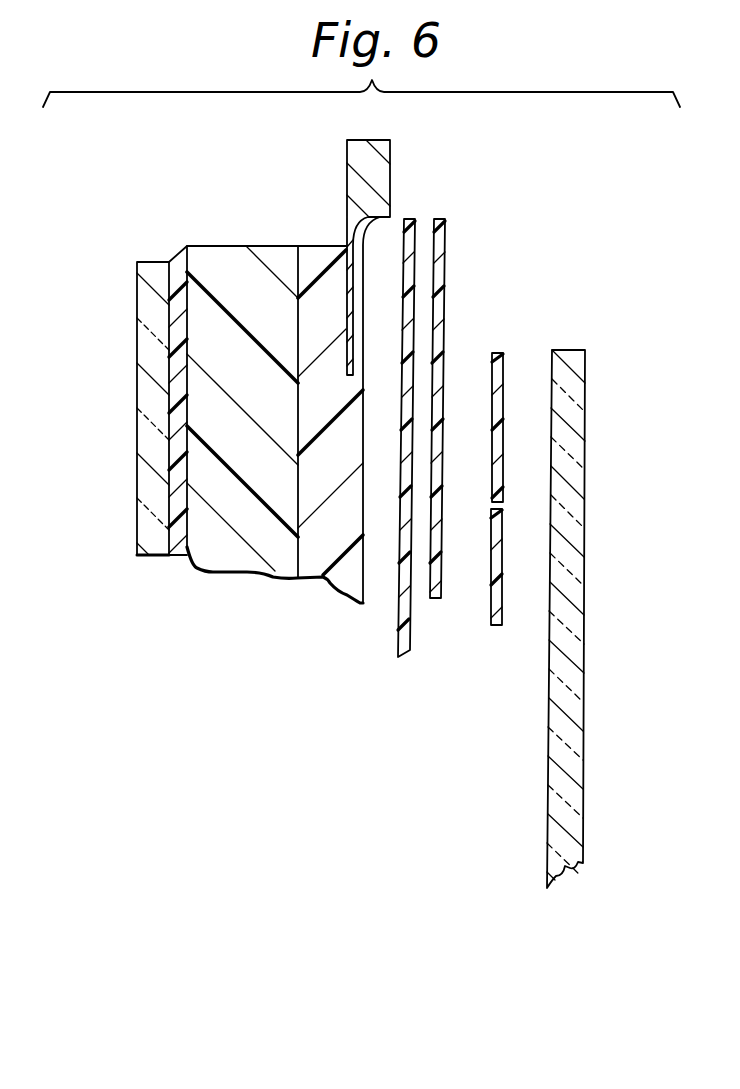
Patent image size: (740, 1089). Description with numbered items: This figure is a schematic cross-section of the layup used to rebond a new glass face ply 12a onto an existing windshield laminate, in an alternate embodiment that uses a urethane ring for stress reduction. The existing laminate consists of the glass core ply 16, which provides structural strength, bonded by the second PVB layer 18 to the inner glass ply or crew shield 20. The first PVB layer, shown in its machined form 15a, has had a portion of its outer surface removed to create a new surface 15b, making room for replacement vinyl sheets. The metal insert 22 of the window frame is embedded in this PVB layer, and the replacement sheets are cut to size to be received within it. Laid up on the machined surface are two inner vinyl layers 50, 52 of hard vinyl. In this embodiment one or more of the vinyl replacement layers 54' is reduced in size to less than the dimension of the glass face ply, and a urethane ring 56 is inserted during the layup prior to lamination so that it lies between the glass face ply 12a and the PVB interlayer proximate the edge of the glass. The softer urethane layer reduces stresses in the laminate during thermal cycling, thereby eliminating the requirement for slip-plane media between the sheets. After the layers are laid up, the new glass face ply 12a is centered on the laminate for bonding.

The new face ply 12a is at (583, 489).
The first PVB layer in machined form 15a is at (323, 552).
The new surface of the PVB layer 15b is at (366, 585).
The glass core ply 16 is at (237, 375).
The second PVB layer 18 is at (180, 470).
The inner glass ply or crew shield 20 is at (158, 522).
The metal insert 22 is at (347, 168).
The inner vinyl layer 50 is at (409, 218).
The inner vinyl layer 52 is at (443, 218).
The reduced-size vinyl replacement layer 54' is at (522, 567).
The urethane ring 56 is at (505, 415).